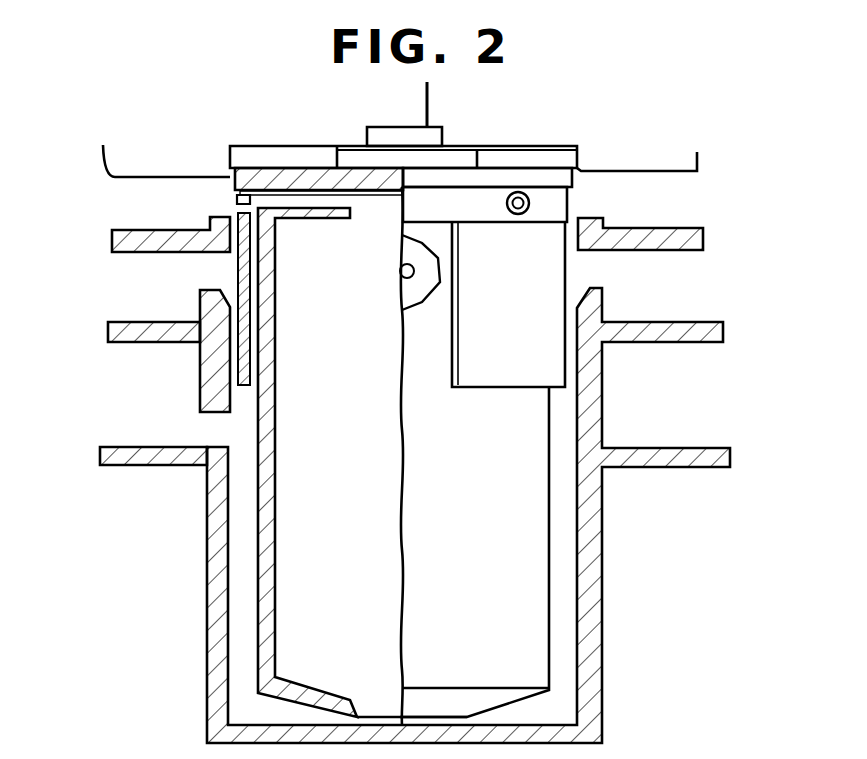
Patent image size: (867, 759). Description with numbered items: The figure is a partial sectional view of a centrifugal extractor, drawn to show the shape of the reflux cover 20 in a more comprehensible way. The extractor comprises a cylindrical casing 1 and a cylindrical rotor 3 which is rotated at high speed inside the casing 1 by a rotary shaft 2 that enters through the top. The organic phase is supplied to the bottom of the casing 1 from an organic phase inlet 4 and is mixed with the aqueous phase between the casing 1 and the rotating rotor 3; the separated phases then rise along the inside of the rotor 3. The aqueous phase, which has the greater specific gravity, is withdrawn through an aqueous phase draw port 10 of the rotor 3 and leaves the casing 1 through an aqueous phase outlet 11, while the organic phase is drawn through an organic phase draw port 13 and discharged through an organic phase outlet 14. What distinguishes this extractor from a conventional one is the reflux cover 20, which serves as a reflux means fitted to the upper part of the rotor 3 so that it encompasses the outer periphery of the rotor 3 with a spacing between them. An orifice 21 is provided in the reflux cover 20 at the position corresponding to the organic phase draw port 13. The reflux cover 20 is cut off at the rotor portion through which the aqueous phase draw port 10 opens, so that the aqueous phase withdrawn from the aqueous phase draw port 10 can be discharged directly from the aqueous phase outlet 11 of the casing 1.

The cylindrical casing 1 is at (212, 707).
The rotary shaft 2 is at (392, 104).
The cylindrical rotor 3 is at (537, 637).
The organic phase inlet 4 is at (125, 410).
The aqueous phase draw port 10 is at (412, 295).
The aqueous phase outlet 11 is at (135, 275).
The organic phase draw port 13 is at (273, 202).
The organic phase outlet 14 is at (138, 183).
The reflux cover 20 is at (240, 348).
The orifice 21 is at (237, 200).